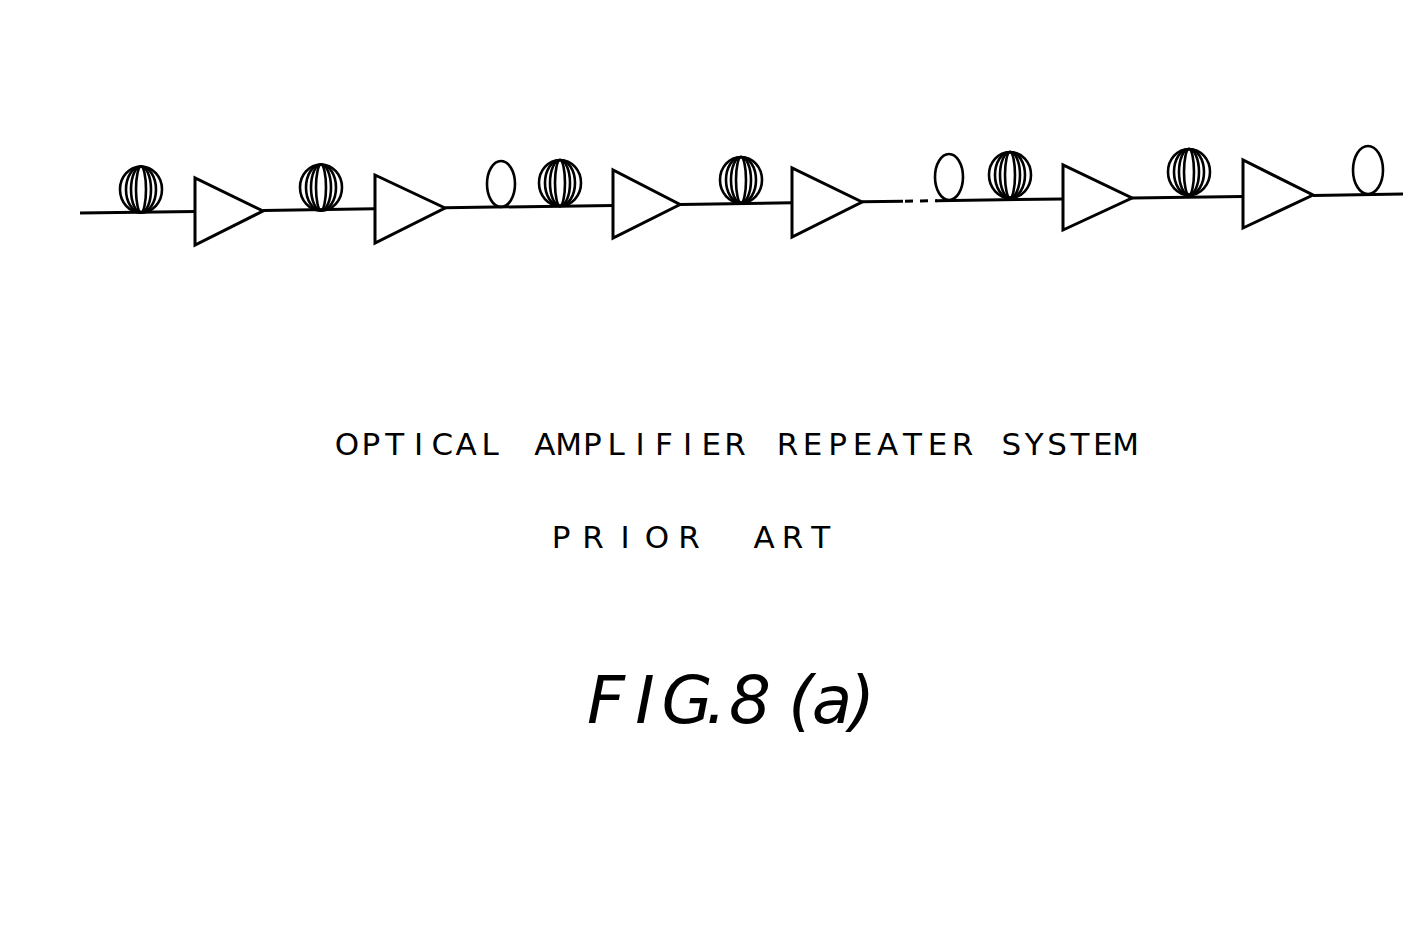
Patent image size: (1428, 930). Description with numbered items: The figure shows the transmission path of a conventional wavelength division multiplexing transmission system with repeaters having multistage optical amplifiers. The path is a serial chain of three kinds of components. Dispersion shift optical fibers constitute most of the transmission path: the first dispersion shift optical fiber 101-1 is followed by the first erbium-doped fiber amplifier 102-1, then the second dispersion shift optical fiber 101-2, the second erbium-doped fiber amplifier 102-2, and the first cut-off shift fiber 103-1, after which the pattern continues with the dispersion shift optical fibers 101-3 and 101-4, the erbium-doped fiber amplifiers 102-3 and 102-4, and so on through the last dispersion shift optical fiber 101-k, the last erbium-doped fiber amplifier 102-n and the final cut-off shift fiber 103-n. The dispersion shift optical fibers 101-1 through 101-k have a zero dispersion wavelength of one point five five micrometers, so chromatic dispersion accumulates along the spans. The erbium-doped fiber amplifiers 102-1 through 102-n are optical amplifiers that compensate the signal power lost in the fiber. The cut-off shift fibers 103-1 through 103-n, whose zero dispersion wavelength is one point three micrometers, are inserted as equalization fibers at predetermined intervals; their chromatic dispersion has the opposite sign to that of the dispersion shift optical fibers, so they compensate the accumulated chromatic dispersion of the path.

The dispersion shift optical fiber 101-1 is at (124, 214).
The dispersion shift optical fiber 101-2 is at (302, 212).
The dispersion shift optical fiber 101-3 is at (555, 208).
The dispersion shift optical fiber 101-4 is at (745, 204).
The dispersion shift optical fiber 101-k is at (1170, 196).
The erbium-doped fiber amplifier 102-1 is at (198, 244).
The erbium-doped fiber amplifier 102-2 is at (436, 198).
The erbium-doped fiber amplifier 102-3 is at (647, 222).
The erbium-doped fiber amplifier 102-4 is at (827, 220).
The erbium-doped fiber amplifier 102-n is at (1268, 220).
The cut-off shift fiber 103-1 is at (500, 208).
The cut-off shift fiber 103-n is at (1355, 184).